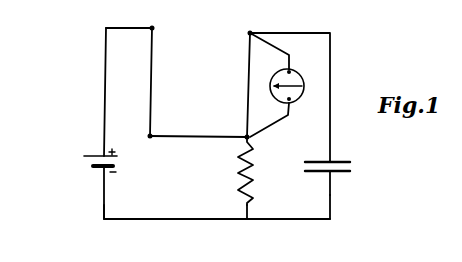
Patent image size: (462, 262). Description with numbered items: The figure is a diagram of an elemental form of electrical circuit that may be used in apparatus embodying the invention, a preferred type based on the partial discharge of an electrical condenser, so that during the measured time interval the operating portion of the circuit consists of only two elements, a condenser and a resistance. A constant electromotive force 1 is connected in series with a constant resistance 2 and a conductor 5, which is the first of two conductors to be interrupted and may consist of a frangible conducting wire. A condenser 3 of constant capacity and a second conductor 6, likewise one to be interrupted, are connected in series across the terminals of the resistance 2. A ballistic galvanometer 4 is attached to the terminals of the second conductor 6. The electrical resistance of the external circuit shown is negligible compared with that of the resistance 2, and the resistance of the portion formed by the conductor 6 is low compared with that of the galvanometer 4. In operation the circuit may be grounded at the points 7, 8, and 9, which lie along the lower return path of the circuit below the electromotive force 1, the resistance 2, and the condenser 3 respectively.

The constant electromotive force 1 is at (112, 184).
The constant resistance 2 is at (228, 171).
The condenser 3 is at (342, 178).
The ballistic galvanometer 4 is at (286, 85).
The conductor 5 is at (137, 81).
The second conductor 6 is at (238, 84).
The grounding point 7 is at (133, 225).
The grounding point 8 is at (247, 225).
The grounding point 9 is at (315, 220).